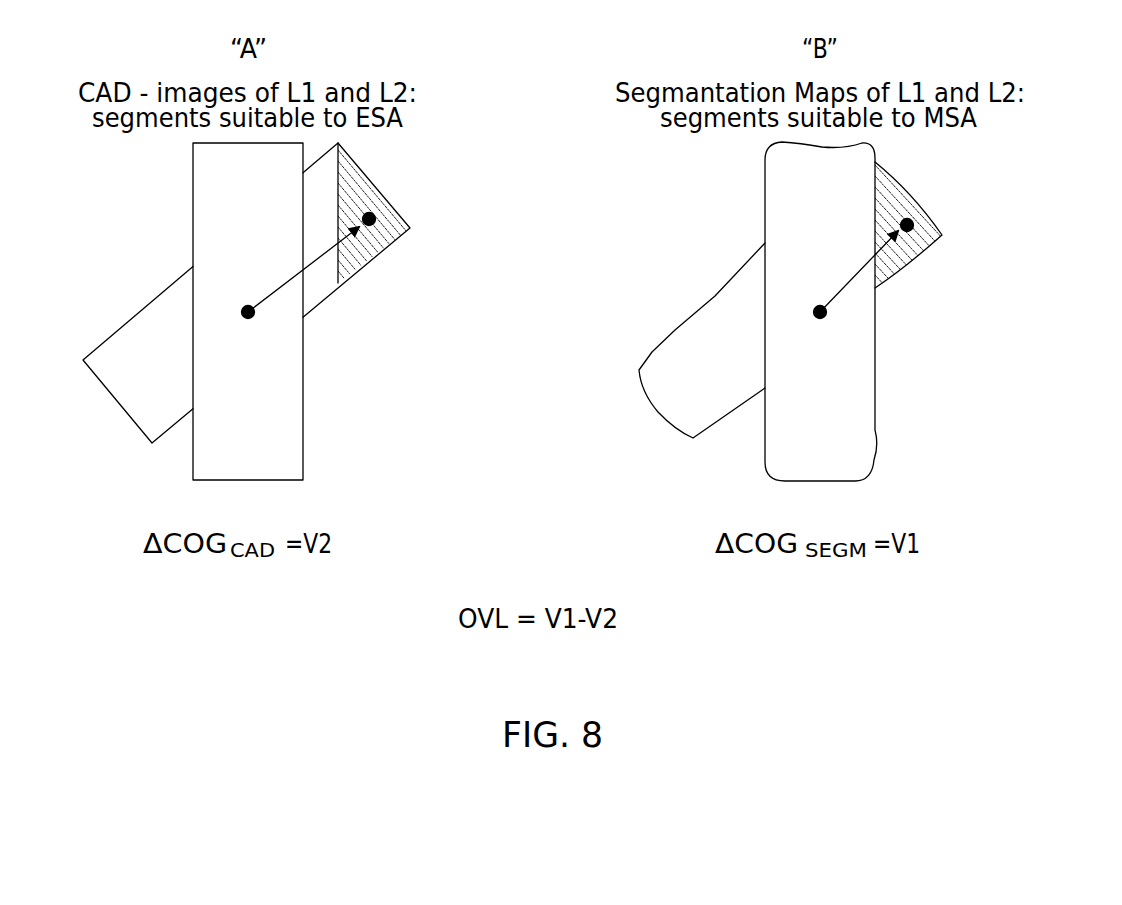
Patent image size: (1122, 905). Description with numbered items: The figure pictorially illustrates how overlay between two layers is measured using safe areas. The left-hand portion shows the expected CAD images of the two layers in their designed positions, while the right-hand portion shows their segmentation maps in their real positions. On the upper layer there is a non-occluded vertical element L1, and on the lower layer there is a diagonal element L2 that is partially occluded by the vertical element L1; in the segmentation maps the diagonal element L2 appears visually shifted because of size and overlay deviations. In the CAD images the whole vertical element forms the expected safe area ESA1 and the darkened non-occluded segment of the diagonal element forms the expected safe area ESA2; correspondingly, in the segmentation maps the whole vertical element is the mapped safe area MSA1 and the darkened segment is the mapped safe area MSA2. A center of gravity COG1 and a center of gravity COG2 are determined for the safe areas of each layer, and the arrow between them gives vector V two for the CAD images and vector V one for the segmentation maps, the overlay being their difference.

The vertical element L1 is at (535, 311).
The diagonal element L2 is at (424, 293).
The expected safe area of layer one ESA1 is at (212, 176).
The expected safe area of layer two ESA2 is at (368, 253).
The mapped safe area of layer one MSA1 is at (793, 177).
The mapped safe area of layer two MSA2 is at (900, 255).
The center of gravity of the layer one safe area COG1 is at (566, 293).
The center of gravity of the layer two safe area COG2 is at (732, 235).